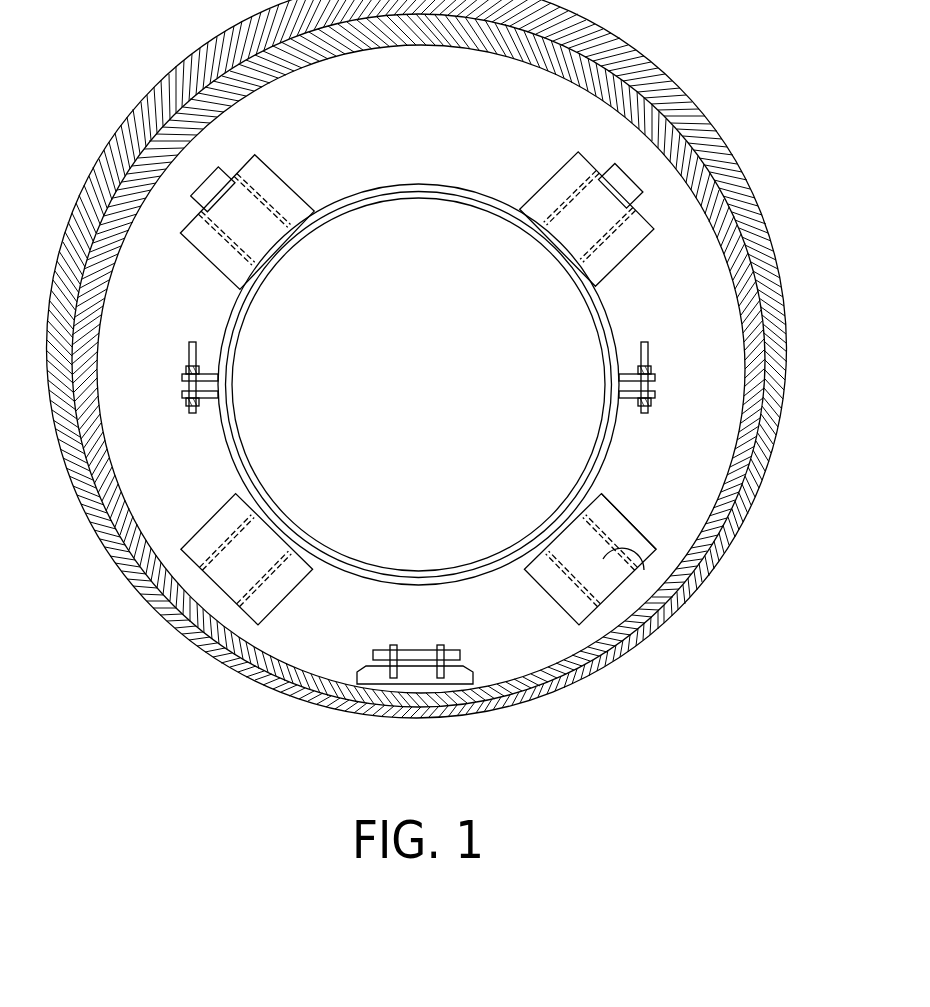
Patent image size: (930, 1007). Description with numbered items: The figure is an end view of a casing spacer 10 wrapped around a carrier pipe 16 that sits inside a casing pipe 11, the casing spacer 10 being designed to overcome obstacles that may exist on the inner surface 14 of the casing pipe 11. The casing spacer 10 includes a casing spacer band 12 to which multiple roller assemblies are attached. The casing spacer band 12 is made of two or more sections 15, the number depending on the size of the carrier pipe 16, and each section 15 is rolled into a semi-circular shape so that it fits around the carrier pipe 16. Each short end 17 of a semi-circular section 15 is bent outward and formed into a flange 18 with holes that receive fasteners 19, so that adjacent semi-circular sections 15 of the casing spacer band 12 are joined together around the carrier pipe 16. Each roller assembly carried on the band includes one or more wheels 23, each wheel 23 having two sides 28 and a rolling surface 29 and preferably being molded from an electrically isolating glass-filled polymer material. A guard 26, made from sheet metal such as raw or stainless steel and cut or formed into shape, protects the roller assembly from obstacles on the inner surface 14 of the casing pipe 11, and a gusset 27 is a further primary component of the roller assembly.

The casing spacer 10 is at (414, 150).
The casing pipe 11 is at (748, 172).
The casing spacer band 12 is at (302, 693).
The inner surface 14 is at (325, 35).
The section 15 is at (605, 350).
The carrier pipe 16 is at (230, 337).
The short end 17 is at (183, 378).
The flange 18 is at (206, 370).
The fastener 19 is at (190, 350).
The wheel 23 is at (202, 180).
The guard 26 is at (285, 175).
The gusset 27 is at (625, 518).
The side 28 is at (192, 197).
The rolling surface 29 is at (636, 600).